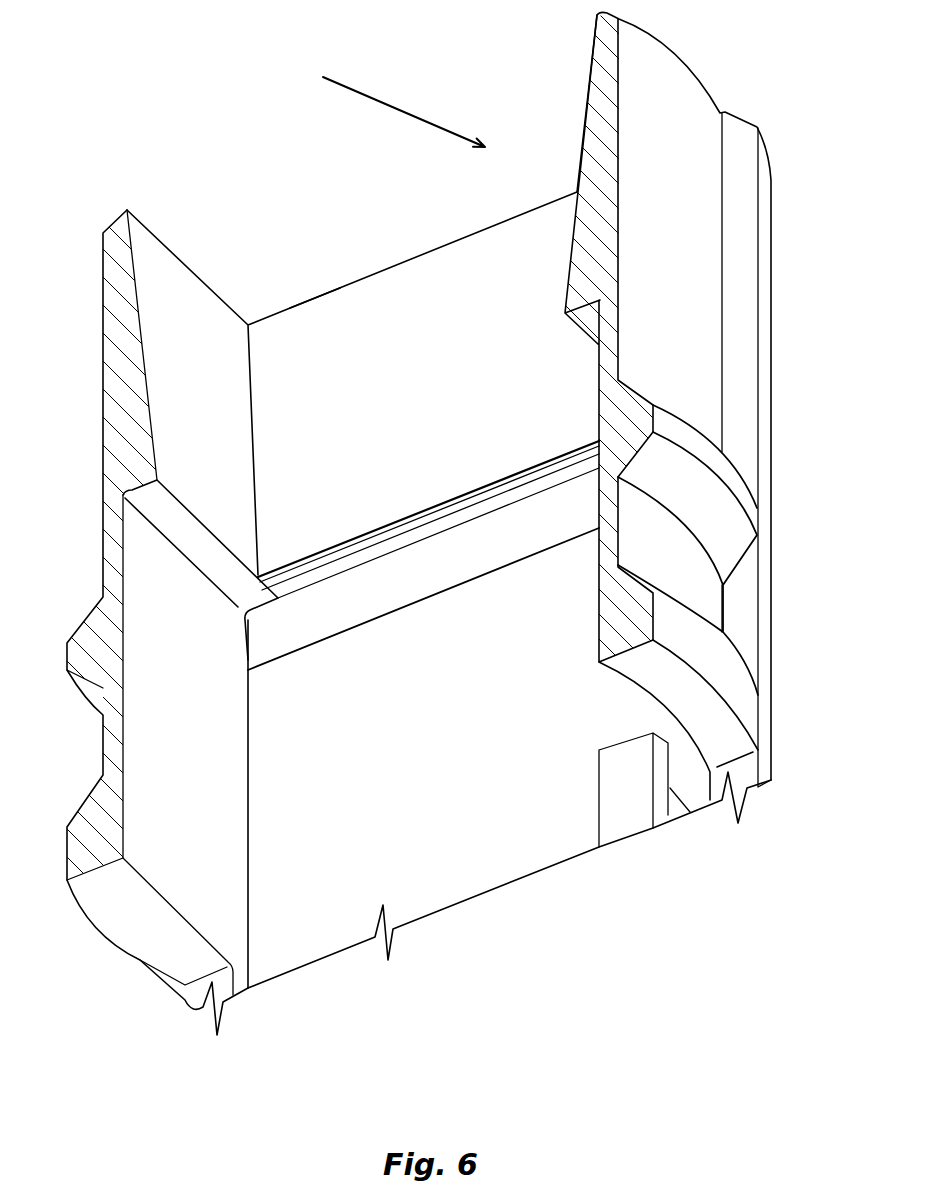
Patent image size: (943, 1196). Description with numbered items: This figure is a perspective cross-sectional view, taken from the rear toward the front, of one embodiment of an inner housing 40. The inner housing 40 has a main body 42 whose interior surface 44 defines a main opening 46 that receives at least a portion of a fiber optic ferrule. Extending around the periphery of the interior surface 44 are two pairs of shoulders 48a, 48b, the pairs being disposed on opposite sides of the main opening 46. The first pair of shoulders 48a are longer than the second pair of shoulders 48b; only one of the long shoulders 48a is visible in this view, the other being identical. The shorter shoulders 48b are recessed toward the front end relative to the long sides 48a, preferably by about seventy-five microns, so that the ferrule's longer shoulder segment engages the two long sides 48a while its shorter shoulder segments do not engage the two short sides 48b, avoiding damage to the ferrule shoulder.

The inner housing 40 is at (797, 385).
The main body 42 is at (760, 510).
The interior surface 44 is at (392, 286).
The main opening 46 is at (317, 290).
The first pair of shoulders 48a is at (363, 553).
The second pair of shoulders 48b is at (160, 508).